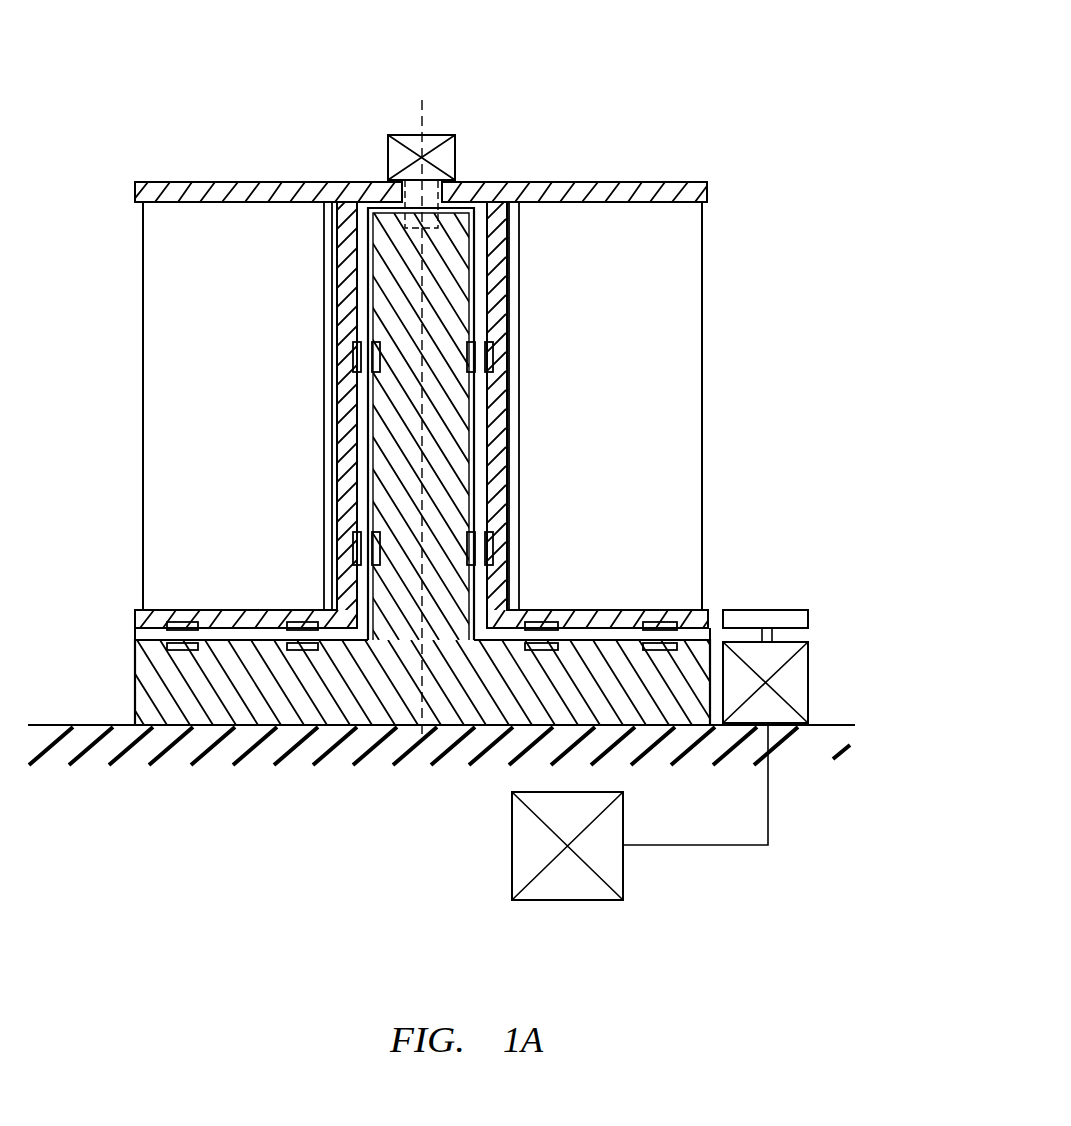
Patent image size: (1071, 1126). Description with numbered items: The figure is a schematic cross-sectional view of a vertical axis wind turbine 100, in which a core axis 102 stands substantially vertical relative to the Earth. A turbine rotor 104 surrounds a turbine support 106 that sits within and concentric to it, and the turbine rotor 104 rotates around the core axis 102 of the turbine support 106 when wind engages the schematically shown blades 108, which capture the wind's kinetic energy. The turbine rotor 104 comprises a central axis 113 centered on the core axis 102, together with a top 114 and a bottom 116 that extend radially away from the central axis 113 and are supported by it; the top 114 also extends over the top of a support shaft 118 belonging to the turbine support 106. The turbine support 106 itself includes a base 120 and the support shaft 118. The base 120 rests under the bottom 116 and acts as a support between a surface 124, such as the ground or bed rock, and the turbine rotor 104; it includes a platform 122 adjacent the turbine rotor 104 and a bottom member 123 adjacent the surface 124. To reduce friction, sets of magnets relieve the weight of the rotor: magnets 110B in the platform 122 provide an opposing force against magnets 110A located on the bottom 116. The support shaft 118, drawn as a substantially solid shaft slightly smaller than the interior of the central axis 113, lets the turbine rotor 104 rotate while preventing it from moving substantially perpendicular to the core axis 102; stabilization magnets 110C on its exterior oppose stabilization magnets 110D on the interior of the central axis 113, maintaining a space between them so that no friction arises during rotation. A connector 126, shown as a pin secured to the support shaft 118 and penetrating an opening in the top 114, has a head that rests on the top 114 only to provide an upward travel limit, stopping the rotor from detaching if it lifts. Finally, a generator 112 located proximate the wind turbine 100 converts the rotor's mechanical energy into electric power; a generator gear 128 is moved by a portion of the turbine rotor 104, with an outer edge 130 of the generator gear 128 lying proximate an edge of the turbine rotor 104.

The wind turbine 100 is at (683, 43).
The core axis 102 is at (420, 106).
The turbine rotor 104 is at (498, 317).
The turbine support 106 is at (478, 476).
The blades 108 is at (142, 300).
The magnets on bottom of turbine rotor 110A is at (178, 622).
The magnets on platform 110B is at (540, 647).
The stabilization magnets on support shaft 110C is at (362, 222).
The stabilization magnets on central axis 110D is at (351, 354).
The generator 112 is at (816, 672).
The central axis 113 is at (504, 432).
The top 114 is at (612, 182).
The bottom 116 is at (690, 607).
The support shaft 118 is at (383, 397).
The base 120 is at (222, 716).
The platform 122 is at (135, 636).
The bottom member 123 is at (283, 730).
The surface 124 is at (103, 742).
The connector 126 is at (458, 153).
The generator gear 128 is at (816, 614).
The outer edge 130 is at (715, 608).